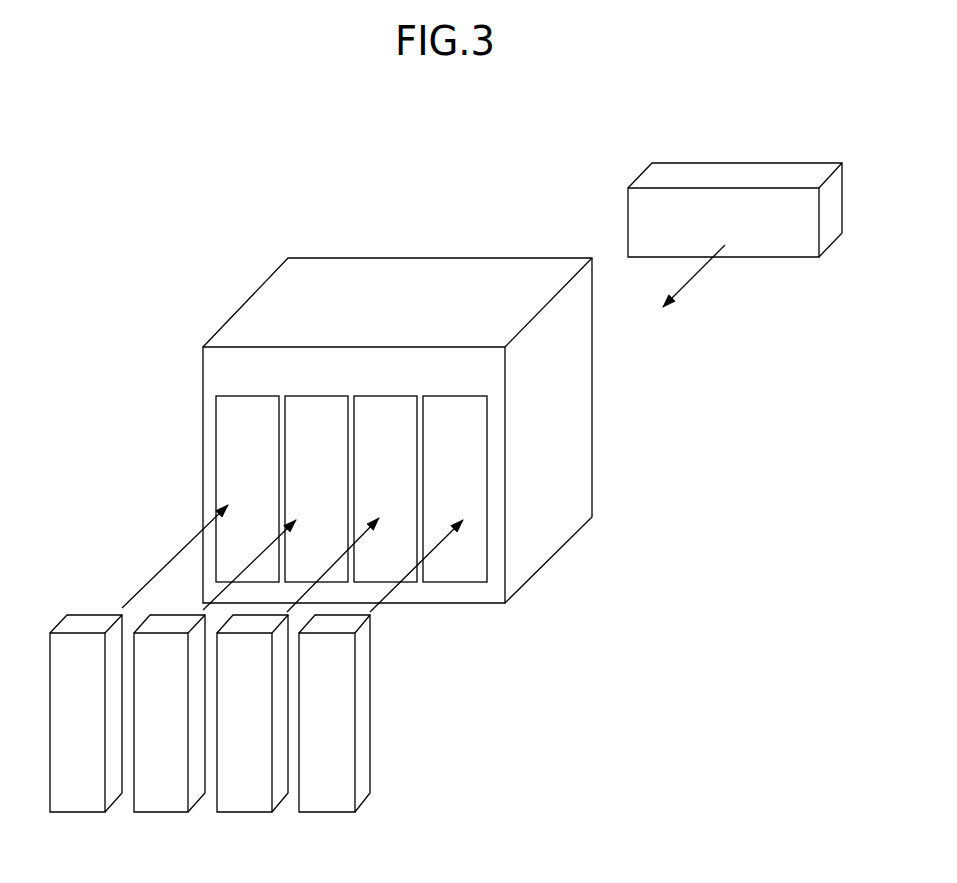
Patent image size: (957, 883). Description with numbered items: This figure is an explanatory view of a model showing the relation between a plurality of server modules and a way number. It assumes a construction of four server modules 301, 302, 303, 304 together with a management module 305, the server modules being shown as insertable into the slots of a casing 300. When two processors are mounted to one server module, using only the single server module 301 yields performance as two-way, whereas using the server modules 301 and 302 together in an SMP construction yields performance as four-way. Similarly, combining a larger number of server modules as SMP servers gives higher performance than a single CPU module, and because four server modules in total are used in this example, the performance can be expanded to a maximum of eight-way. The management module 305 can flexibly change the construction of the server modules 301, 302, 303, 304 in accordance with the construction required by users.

The casing 300 is at (442, 258).
The server module 301 is at (77, 812).
The server module 302 is at (161, 812).
The server module 303 is at (244, 812).
The server module 304 is at (326, 812).
The management module 305 is at (747, 163).